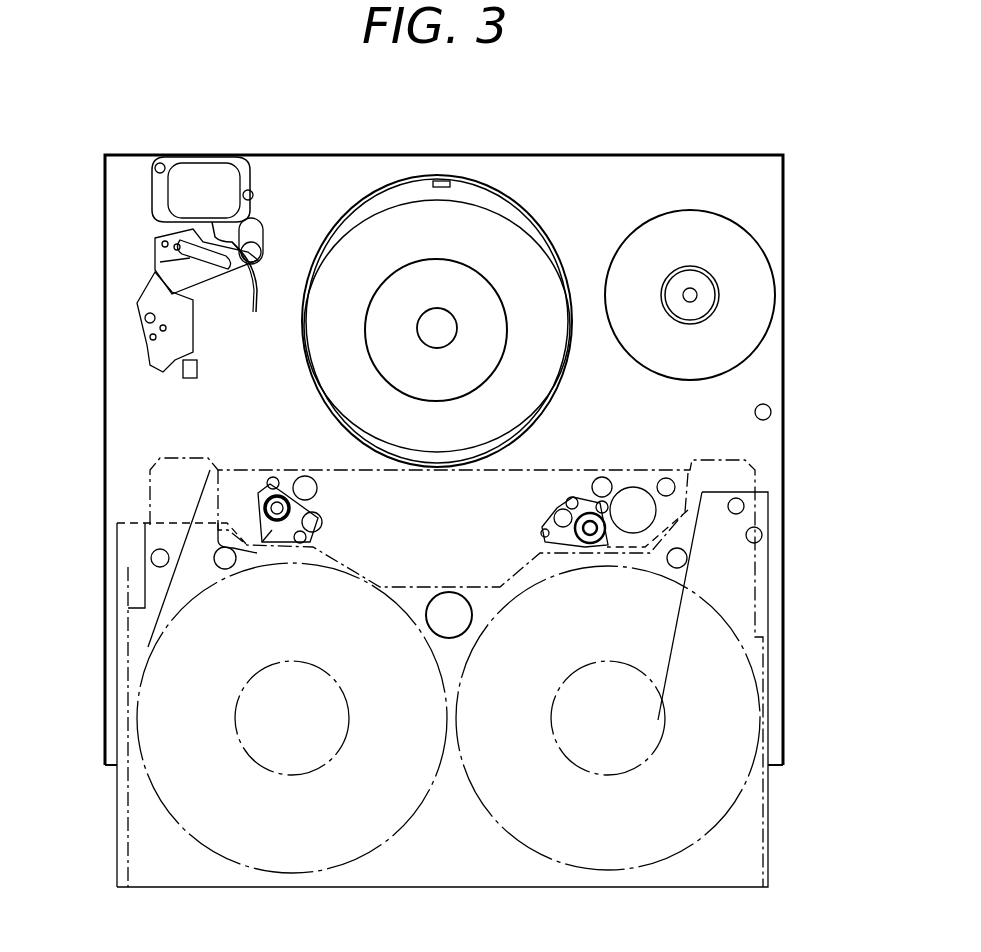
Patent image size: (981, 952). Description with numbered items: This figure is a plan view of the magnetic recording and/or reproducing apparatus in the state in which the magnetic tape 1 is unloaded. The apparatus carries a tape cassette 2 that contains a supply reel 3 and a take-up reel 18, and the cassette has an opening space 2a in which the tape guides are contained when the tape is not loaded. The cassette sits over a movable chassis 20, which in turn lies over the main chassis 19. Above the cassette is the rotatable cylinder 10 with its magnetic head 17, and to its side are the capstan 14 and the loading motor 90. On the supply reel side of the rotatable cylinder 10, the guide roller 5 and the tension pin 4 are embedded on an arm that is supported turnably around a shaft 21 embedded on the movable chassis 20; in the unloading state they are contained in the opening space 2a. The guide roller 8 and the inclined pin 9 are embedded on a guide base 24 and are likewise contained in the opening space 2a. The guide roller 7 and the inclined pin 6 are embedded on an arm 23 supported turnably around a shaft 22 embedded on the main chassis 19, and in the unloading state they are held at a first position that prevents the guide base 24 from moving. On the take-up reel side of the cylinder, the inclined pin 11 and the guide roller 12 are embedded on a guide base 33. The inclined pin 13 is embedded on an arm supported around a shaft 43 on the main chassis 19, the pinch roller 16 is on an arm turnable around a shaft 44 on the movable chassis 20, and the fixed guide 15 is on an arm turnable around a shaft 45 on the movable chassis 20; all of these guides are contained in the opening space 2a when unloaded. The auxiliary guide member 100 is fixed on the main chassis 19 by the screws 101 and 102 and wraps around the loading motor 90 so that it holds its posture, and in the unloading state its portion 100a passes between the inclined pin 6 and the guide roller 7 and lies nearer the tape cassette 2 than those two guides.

The magnetic tape 1 is at (533, 473).
The tape cassette 2 is at (168, 878).
The opening space 2a is at (423, 587).
The supply reel 3 is at (265, 860).
The tension pin 4 is at (273, 483).
The guide roller 5 is at (305, 488).
The inclined pin 6 is at (210, 255).
The guide roller 7 is at (257, 225).
The guide roller 8 is at (257, 510).
The inclined pin 9 is at (322, 520).
The rotatable cylinder 10 is at (473, 218).
The inclined pin 11 is at (556, 518).
The guide roller 12 is at (592, 543).
The inclined pin 13 is at (602, 477).
The capstan 14 is at (690, 295).
The fixed guide 15 is at (666, 478).
The pinch roller 16 is at (633, 500).
The magnetic head 17 is at (447, 181).
The take-up reel 18 is at (605, 860).
The main chassis 19 is at (738, 175).
The movable chassis 20 is at (117, 526).
The shaft 21 is at (152, 558).
The shaft 22 is at (147, 318).
The arm 23 is at (162, 297).
The guide base 24 is at (272, 540).
The guide base 33 is at (557, 533).
The shaft 43 is at (771, 412).
The shaft 44 is at (744, 506).
The shaft 45 is at (762, 535).
The loading motor 90 is at (197, 175).
The auxiliary guide member 100 is at (243, 167).
The portion 100a is at (255, 308).
The screw 101 is at (158, 166).
The screw 102 is at (250, 193).